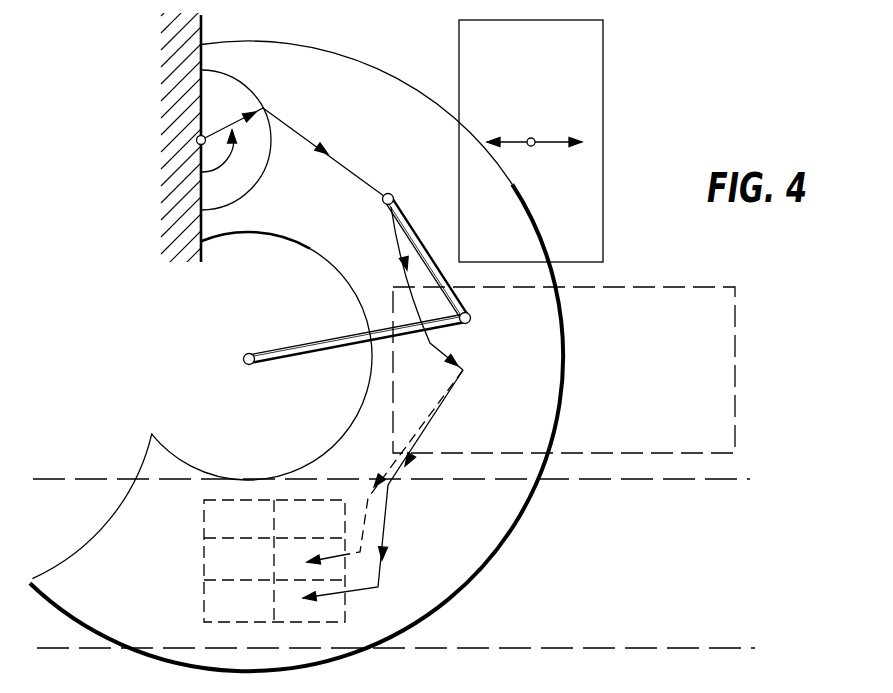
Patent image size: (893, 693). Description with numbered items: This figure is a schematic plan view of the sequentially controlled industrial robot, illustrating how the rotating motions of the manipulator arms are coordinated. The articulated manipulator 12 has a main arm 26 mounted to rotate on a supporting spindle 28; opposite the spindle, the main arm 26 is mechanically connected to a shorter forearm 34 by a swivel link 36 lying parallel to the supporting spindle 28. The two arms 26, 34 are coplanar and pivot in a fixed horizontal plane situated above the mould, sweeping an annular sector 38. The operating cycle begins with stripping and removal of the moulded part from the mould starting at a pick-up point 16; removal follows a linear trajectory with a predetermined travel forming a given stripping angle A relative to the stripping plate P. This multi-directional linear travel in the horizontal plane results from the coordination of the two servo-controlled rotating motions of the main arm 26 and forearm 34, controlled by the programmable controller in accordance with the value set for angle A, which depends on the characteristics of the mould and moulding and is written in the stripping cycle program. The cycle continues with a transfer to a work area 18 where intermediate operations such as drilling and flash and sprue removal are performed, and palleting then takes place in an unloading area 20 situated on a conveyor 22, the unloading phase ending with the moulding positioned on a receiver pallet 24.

The stripping plate P is at (196, 44).
The stripping angle A is at (223, 151).
The articulated manipulator 12 is at (466, 276).
The pick-up point 16 is at (203, 136).
The work area 18 is at (708, 445).
The unloading area 20 is at (225, 630).
The conveyor 22 is at (622, 628).
The receiver pallet 24 is at (331, 606).
The main arm 26 is at (342, 340).
The supporting spindle 28 is at (246, 355).
The forearm 34 is at (421, 243).
The swivel link 36 is at (471, 318).
The annular sector 38 is at (373, 82).